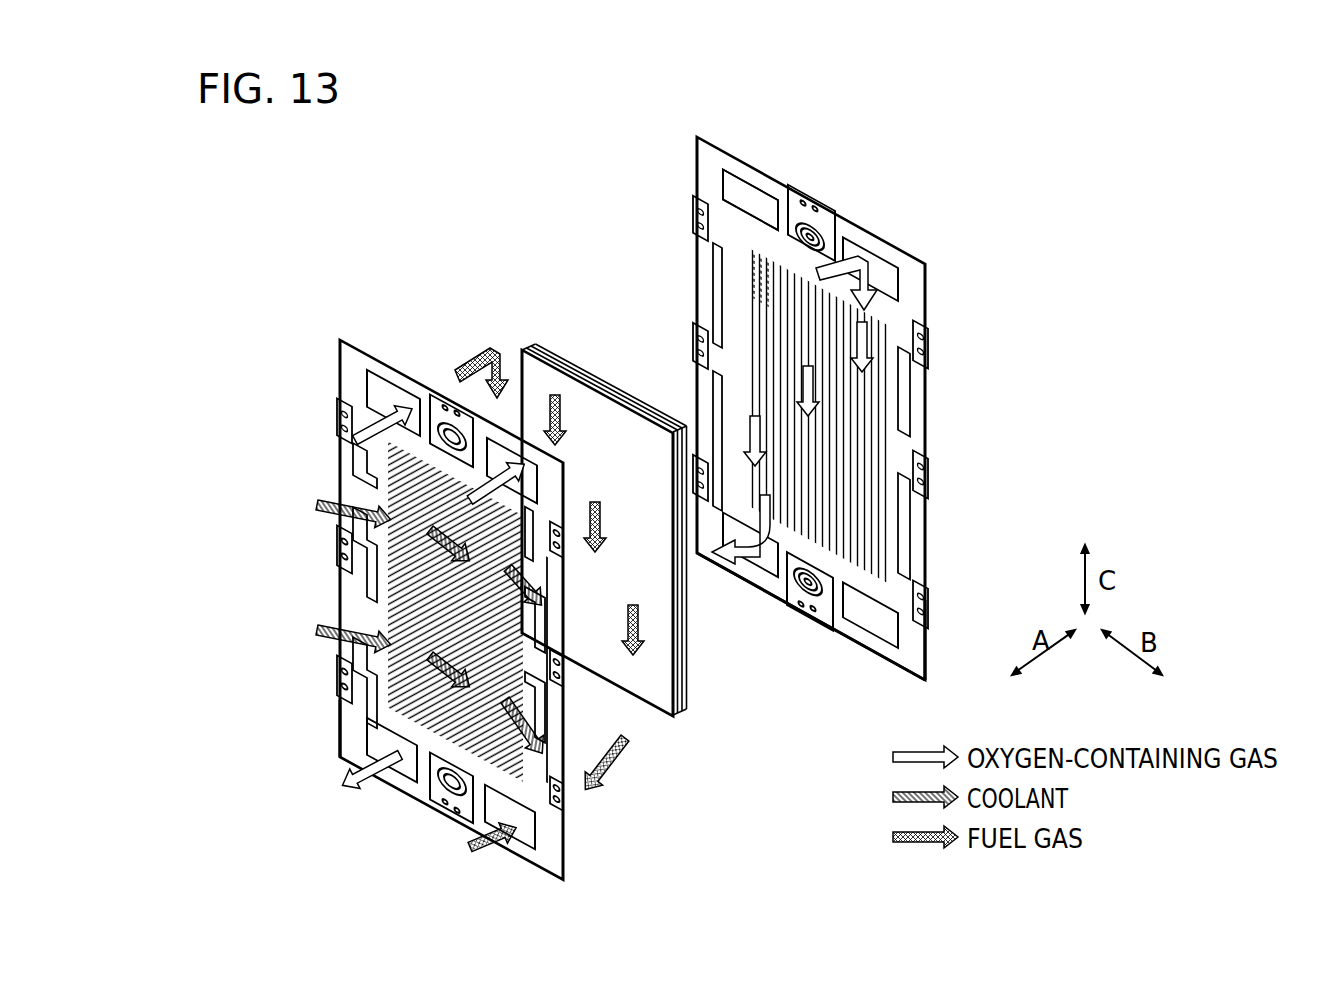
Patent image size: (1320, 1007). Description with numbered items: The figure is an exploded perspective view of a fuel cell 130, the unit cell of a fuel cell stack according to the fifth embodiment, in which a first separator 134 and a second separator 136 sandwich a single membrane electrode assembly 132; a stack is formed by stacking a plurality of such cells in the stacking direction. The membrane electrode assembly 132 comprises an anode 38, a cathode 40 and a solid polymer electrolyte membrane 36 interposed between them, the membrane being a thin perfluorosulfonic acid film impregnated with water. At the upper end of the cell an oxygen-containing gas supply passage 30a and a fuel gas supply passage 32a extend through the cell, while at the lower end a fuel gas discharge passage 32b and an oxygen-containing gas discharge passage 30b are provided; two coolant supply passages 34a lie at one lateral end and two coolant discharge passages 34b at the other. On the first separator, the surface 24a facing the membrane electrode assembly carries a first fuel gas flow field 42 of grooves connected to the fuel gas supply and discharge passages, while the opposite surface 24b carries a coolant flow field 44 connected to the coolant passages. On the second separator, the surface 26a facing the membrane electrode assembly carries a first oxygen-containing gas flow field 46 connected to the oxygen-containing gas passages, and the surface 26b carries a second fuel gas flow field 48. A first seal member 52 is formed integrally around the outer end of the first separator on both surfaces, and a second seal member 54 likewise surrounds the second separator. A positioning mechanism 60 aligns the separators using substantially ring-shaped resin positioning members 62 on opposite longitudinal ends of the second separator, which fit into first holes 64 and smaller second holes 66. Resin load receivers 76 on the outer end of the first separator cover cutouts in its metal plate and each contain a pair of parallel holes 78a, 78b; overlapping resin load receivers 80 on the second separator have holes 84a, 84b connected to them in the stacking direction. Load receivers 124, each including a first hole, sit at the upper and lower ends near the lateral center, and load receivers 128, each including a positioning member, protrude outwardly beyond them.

The fuel cell 130 is at (270, 171).
The first separator 134 is at (337, 341).
The membrane electrode assembly 132 is at (524, 347).
The second separator 136 is at (696, 136).
The fuel gas supply passage 32a is at (349, 392).
The fuel gas discharge passage 32b is at (535, 835).
The oxygen-containing gas supply passage 30a is at (540, 494).
The oxygen-containing gas discharge passage 30b is at (405, 772).
The coolant supply passage 34a is at (355, 525).
The coolant discharge passage 34b is at (548, 583).
The load receiver 124 is at (437, 394).
The load receiver 128 is at (795, 190).
The first hole 64 is at (445, 795).
The second hole 66 is at (788, 280).
The coolant flow field 44 is at (520, 680).
The first fuel gas flow field 42 is at (557, 612).
The first oxygen-containing gas flow field 46 is at (845, 468).
The second fuel gas flow field 48 is at (912, 412).
The first seal member 52 is at (563, 733).
The second seal member 54 is at (926, 520).
The solid polymer electrolyte membrane 36 is at (684, 712).
The anode 38 is at (672, 716).
The cathode 40 is at (687, 672).
The positioning member 62 is at (781, 196).
The positioning mechanism 60 is at (752, 167).
The resin load receiver 76 is at (339, 448).
The hole 78a is at (338, 414).
The hole 78b is at (338, 428).
The resin load receiver 80 is at (696, 251).
The hole 84a is at (696, 212).
The hole 84b is at (696, 226).
The surface 24a is at (338, 739).
The surface 24b is at (338, 706).
The surface 26a is at (905, 634).
The surface 26b is at (905, 665).